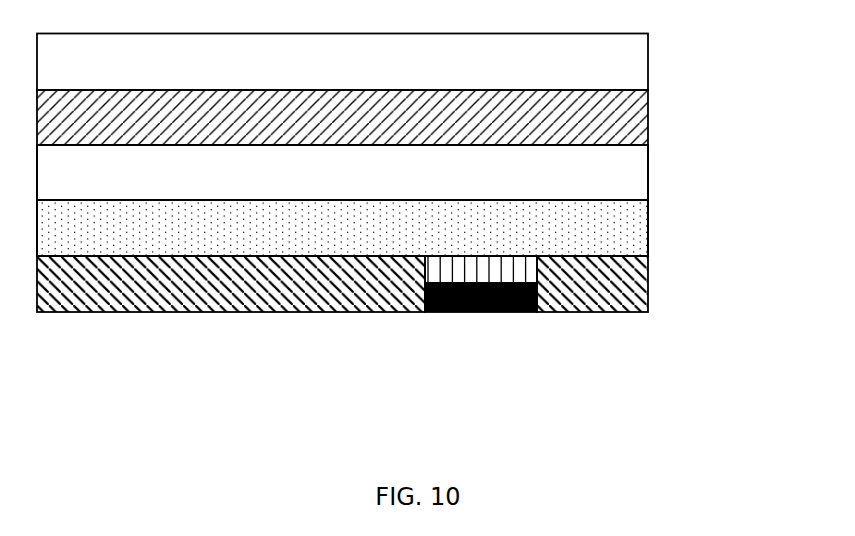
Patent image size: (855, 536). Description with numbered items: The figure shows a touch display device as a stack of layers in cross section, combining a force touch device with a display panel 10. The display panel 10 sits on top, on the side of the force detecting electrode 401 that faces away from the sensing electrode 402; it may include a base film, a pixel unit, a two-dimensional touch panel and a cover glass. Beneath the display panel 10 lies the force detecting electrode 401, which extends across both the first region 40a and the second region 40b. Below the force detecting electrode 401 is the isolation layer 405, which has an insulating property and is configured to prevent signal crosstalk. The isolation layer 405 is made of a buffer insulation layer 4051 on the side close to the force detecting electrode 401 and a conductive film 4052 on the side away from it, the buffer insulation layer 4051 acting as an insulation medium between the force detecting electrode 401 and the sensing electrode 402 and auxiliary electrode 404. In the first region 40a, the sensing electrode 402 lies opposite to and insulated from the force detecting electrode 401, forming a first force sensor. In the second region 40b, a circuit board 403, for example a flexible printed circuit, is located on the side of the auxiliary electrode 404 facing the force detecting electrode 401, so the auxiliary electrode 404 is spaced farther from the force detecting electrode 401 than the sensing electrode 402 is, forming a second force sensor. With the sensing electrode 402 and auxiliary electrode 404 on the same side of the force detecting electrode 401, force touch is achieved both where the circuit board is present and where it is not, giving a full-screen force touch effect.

The display panel 10 is at (620, 62).
The force detecting electrode 401 is at (620, 117).
The buffer insulation layer 4051 is at (620, 173).
The conductive film 4052 is at (620, 228).
The isolation layer 405 is at (732, 173).
The sensing electrode 402 is at (618, 283).
The circuit board 403 is at (522, 264).
The auxiliary electrode 404 is at (618, 302).
The first region 40a is at (648, 317).
The second region 40b is at (425, 317).